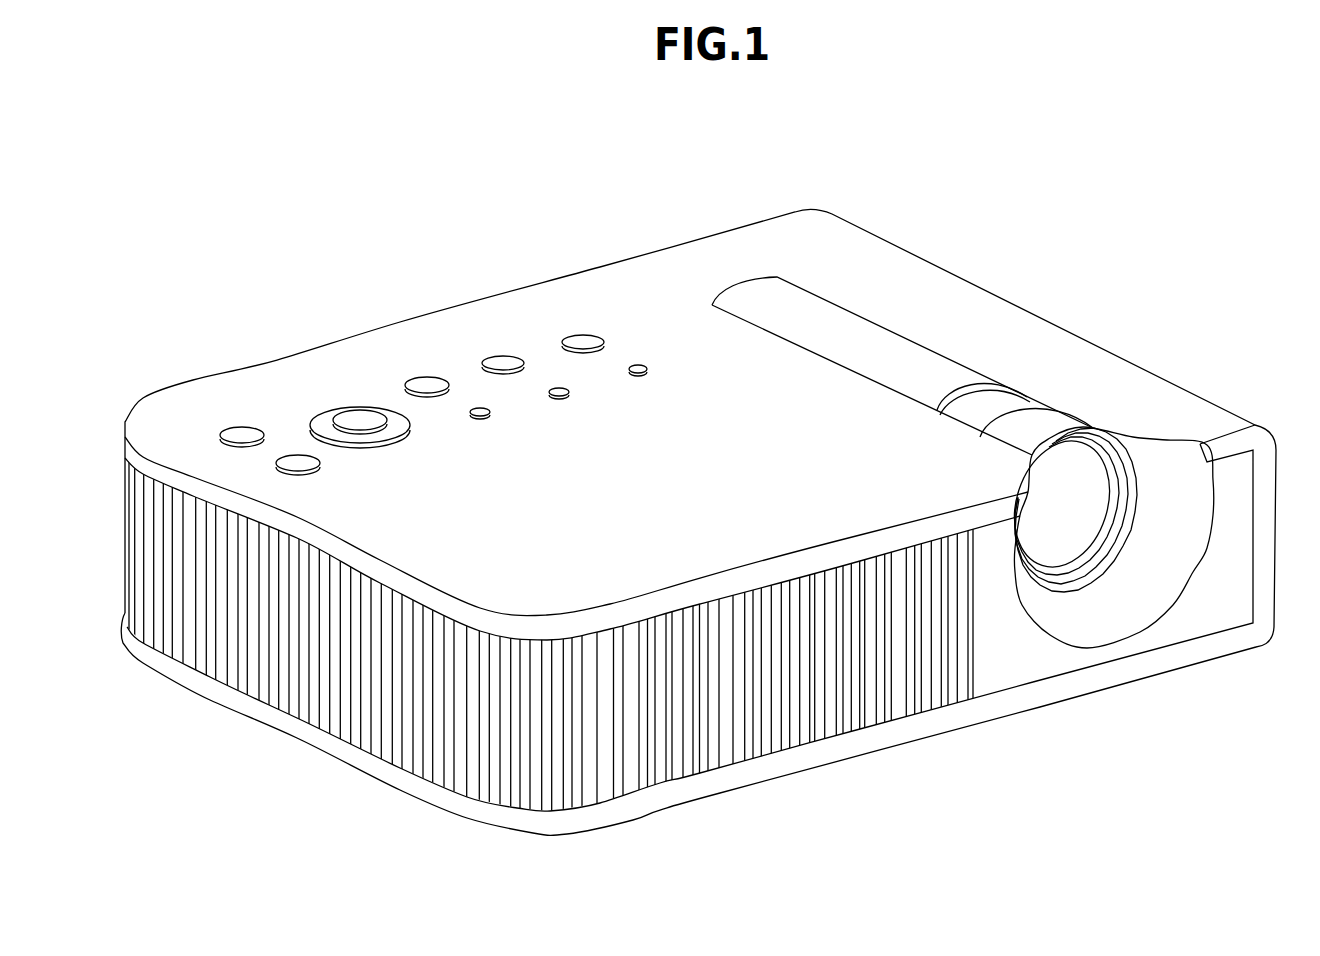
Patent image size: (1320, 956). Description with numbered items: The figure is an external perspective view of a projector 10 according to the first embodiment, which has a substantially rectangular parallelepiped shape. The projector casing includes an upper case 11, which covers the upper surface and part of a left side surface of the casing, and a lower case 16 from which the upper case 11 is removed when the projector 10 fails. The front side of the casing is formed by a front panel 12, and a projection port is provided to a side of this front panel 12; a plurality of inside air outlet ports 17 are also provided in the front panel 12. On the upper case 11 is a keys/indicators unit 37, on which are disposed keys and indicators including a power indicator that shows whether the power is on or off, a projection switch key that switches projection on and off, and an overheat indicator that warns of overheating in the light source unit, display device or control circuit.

The projector 10 is at (887, 160).
The upper case 11 is at (615, 293).
The front panel 12 is at (1005, 655).
The lower case 16 is at (290, 728).
The inside air outlet ports 17 is at (727, 743).
The keys/indicators unit 37 is at (367, 400).